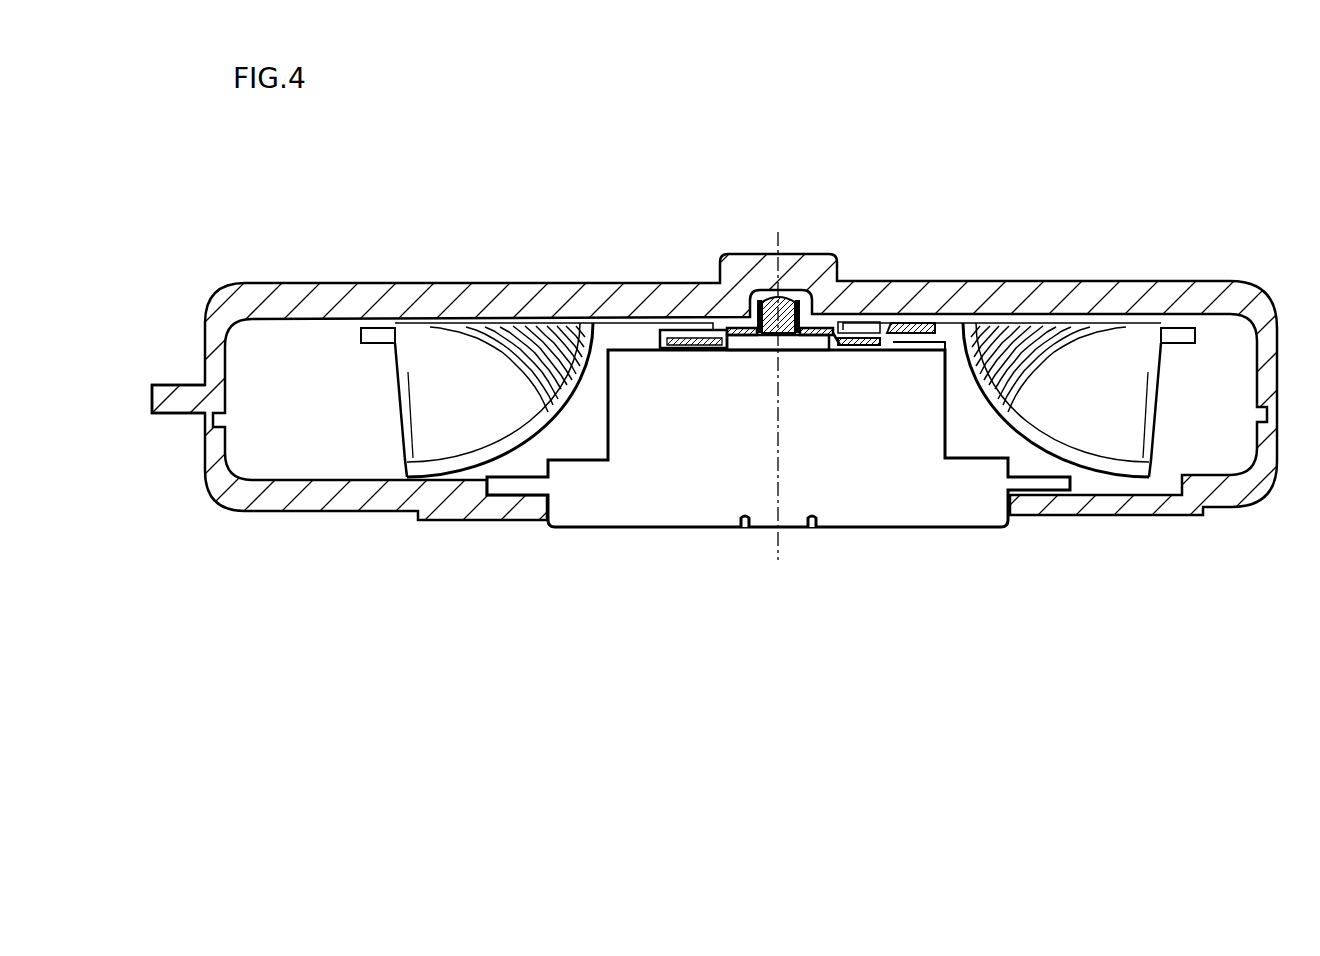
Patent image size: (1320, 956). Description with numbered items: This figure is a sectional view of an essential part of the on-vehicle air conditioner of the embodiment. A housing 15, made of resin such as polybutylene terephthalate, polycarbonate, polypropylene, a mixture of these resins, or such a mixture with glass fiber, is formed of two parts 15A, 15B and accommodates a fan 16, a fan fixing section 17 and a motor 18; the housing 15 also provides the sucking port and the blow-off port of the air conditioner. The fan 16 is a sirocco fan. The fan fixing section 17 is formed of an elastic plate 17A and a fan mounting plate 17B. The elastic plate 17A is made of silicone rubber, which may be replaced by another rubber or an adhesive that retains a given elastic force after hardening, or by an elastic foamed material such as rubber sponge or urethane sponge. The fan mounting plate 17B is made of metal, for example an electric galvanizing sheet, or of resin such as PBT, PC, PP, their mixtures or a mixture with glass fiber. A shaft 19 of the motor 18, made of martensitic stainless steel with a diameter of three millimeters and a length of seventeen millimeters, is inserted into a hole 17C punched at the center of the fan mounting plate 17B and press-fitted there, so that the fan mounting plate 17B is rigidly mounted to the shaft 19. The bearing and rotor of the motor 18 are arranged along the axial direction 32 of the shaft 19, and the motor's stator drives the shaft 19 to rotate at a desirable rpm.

The housing 15 is at (660, 457).
The housing part 15A is at (171, 396).
The housing part 15B is at (260, 498).
The fan 16 is at (445, 365).
The fan fixing section 17 is at (853, 252).
The elastic plate 17A is at (855, 333).
The fan mounting plate 17B is at (930, 327).
The hole 17C is at (810, 322).
The motor 18 is at (605, 502).
The shaft 19 is at (768, 300).
The axial direction 32 is at (778, 232).